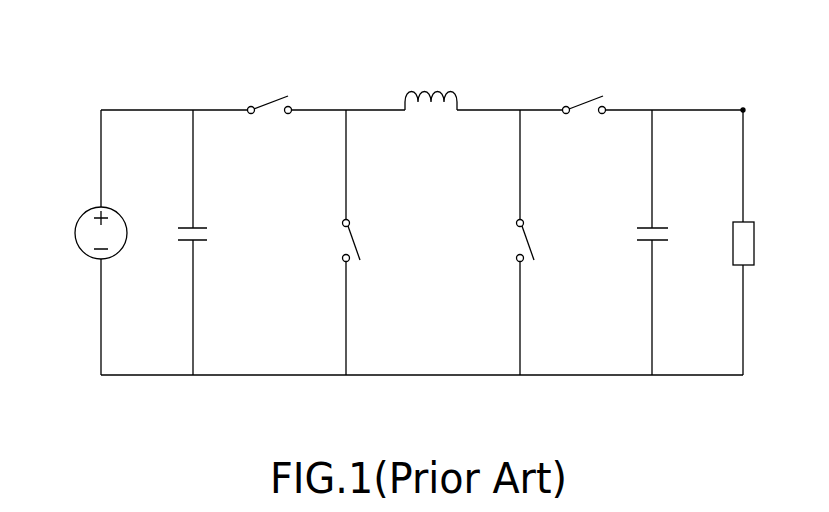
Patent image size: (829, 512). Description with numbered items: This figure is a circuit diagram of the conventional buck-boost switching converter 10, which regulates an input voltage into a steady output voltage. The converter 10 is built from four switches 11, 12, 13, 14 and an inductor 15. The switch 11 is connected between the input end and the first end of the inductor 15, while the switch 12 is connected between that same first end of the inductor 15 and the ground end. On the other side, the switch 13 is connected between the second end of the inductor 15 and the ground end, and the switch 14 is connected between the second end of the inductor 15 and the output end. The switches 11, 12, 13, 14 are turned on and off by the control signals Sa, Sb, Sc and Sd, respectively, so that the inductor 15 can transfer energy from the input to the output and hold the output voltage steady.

The conventional buck-boost switching converter 10 is at (420, 243).
The switch 11 is at (265, 90).
The switch 12 is at (356, 241).
The switch 13 is at (530, 241).
The switch 14 is at (580, 90).
The inductor 15 is at (404, 108).